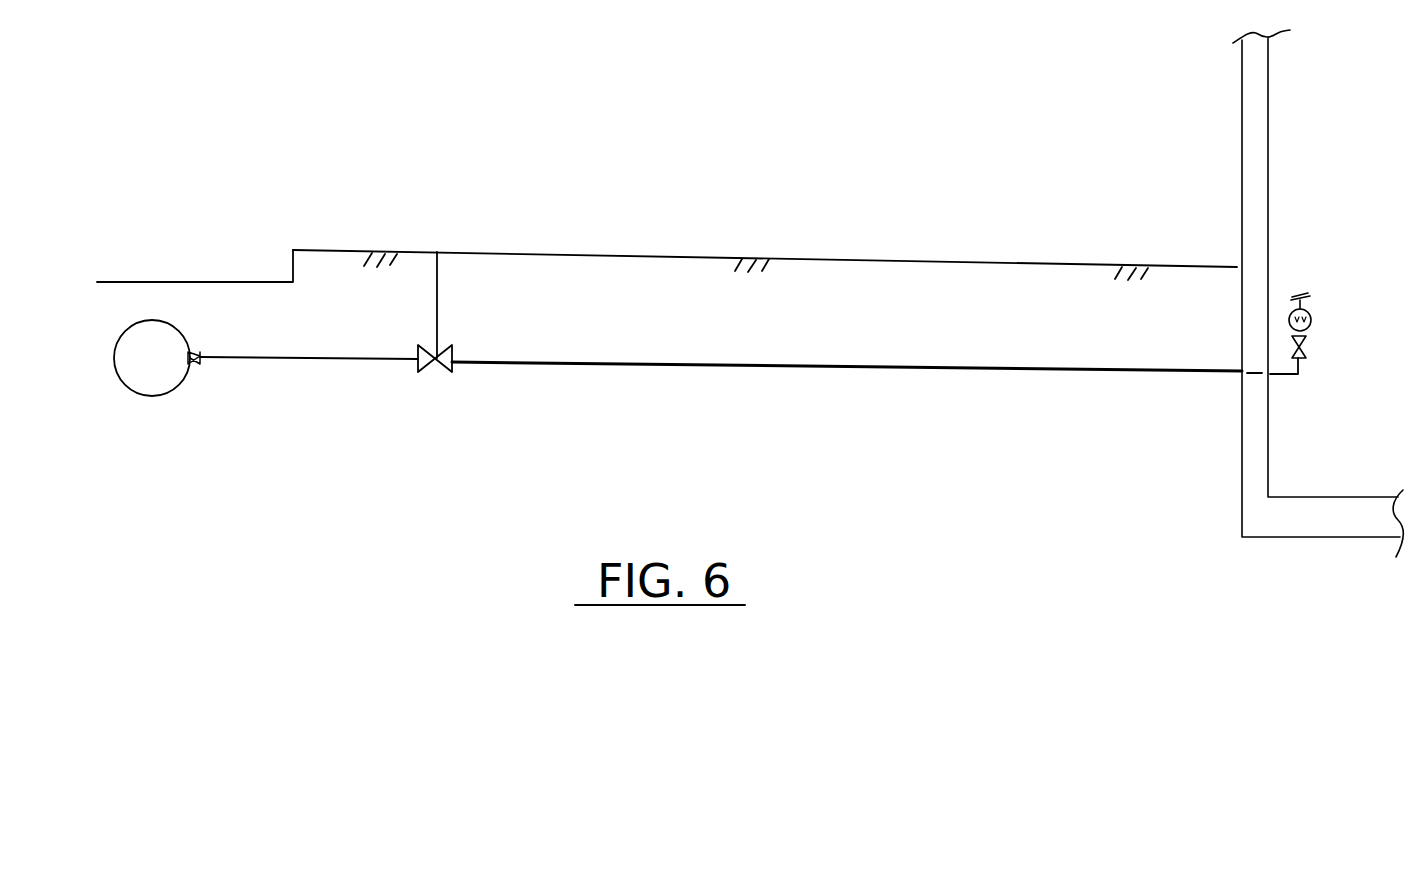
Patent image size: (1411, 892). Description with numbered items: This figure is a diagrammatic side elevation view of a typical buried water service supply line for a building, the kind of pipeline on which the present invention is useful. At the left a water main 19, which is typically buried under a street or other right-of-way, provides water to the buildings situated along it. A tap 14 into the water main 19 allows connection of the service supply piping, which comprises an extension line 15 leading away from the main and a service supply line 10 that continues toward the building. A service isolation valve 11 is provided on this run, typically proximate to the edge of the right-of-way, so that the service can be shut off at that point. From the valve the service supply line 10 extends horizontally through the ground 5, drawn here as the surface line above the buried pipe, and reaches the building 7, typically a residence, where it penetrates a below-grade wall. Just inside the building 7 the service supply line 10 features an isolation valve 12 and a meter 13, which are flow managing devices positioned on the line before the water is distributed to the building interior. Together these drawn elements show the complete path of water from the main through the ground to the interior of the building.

The ground 5 is at (939, 288).
The building 7 is at (1272, 452).
The service supply line 10 is at (905, 371).
The service isolation valve 11 is at (443, 376).
The isolation valve 12 is at (1322, 358).
The meter 13 is at (1328, 320).
The tap 14 is at (203, 340).
The extension line 15 is at (288, 347).
The water main 19 is at (166, 394).